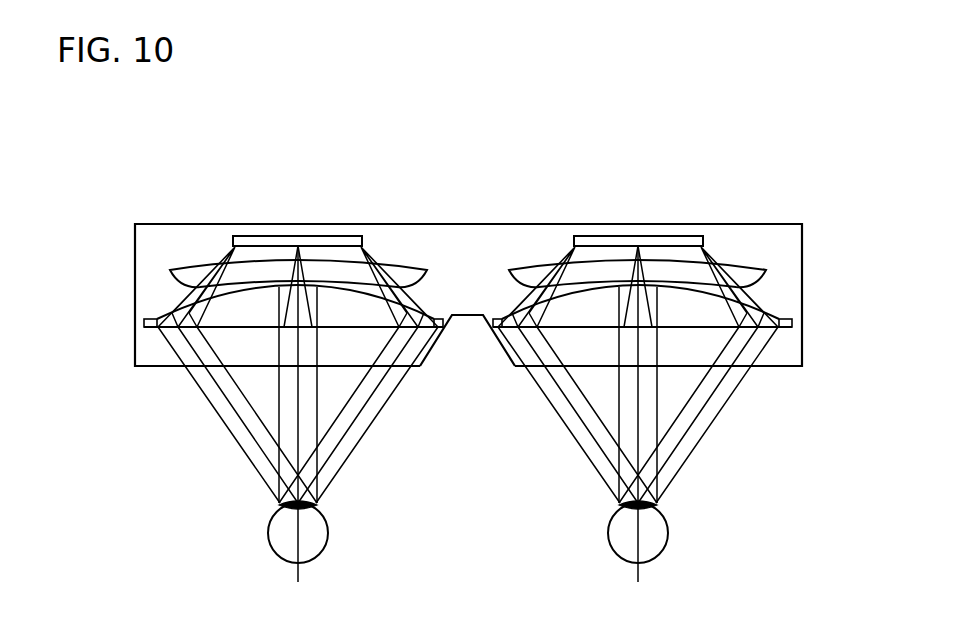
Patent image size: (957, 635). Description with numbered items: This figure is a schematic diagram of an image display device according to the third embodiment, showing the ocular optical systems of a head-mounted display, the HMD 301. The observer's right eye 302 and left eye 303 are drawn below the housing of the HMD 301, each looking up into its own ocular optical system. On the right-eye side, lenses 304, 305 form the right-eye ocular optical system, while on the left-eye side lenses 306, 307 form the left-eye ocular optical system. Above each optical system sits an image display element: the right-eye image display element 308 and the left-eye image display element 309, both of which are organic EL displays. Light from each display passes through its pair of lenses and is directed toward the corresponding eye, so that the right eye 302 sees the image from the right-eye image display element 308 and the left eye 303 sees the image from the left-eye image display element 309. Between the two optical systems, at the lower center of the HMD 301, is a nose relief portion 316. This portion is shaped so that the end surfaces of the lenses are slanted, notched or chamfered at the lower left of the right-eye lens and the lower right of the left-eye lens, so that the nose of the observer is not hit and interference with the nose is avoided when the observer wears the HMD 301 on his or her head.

The HMD 301 is at (183, 223).
The right eye of observer 302 is at (656, 555).
The left eye of observer 303 is at (318, 556).
The lens 304 is at (785, 318).
The lens 305 is at (752, 268).
The lens 306 is at (145, 322).
The lens 307 is at (172, 274).
The right-eye image display element 308 is at (667, 236).
The left-eye image display element 309 is at (318, 236).
The nose relief portion 316 is at (466, 316).